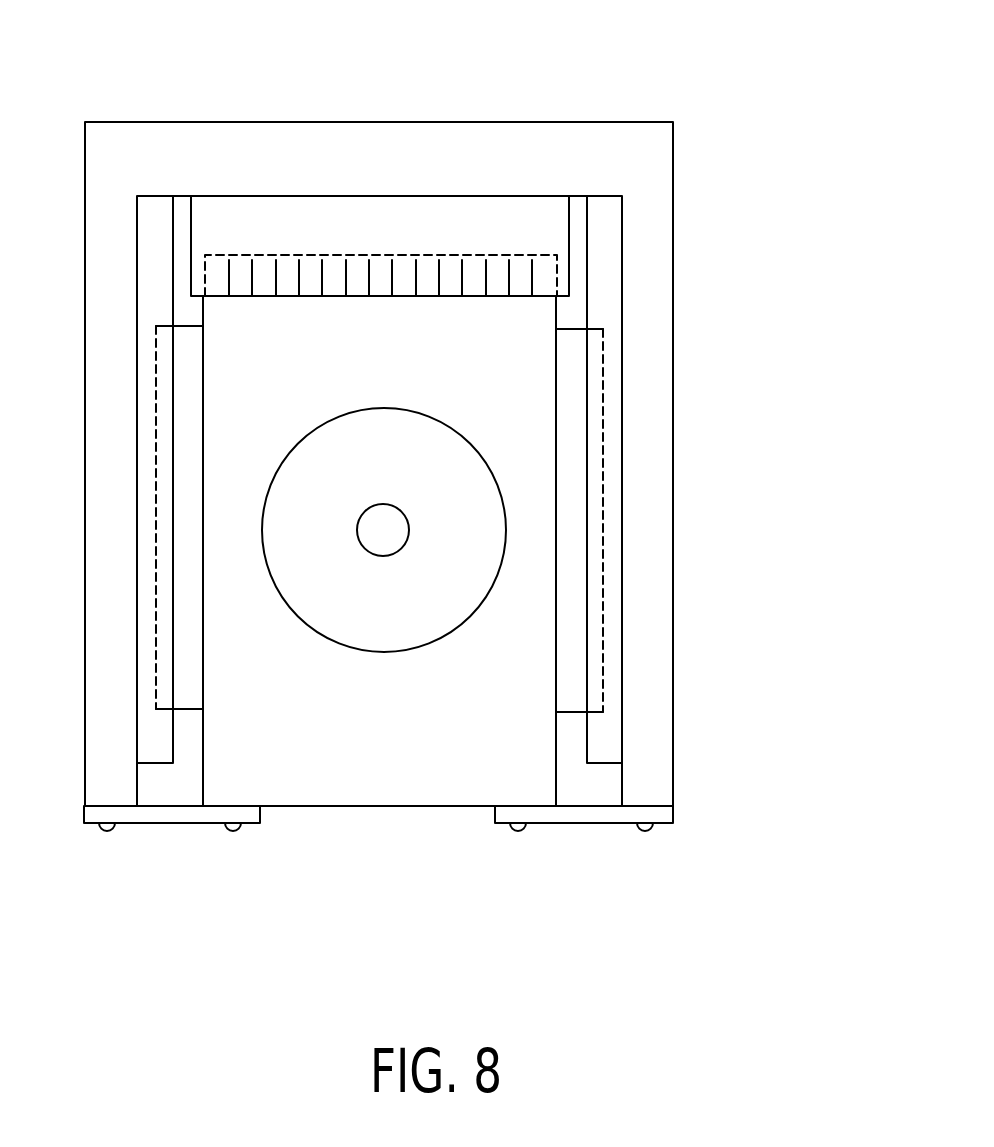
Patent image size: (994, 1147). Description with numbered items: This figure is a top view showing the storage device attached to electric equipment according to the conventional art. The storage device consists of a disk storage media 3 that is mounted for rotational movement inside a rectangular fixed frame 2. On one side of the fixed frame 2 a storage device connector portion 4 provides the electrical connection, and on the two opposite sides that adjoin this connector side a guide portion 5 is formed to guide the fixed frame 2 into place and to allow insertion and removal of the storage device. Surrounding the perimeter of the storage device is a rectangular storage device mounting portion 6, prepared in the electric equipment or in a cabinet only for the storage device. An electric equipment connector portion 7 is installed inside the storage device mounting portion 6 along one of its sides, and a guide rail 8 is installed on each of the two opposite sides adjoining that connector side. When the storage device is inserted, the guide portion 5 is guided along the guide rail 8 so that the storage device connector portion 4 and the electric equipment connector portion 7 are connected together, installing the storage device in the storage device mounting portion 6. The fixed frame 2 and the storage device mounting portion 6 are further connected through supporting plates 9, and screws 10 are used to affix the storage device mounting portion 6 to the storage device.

The fixed frame 2 is at (377, 808).
The storage media 3 is at (362, 627).
The storage device connector portion 4 is at (313, 267).
The guide portion 5 is at (187, 647).
The storage device mounting portion 6 is at (237, 137).
The electric equipment connector portion 7 is at (522, 215).
The guide rail 8 is at (145, 468).
The supporting plate 9 is at (167, 813).
The screw 10 is at (107, 831).